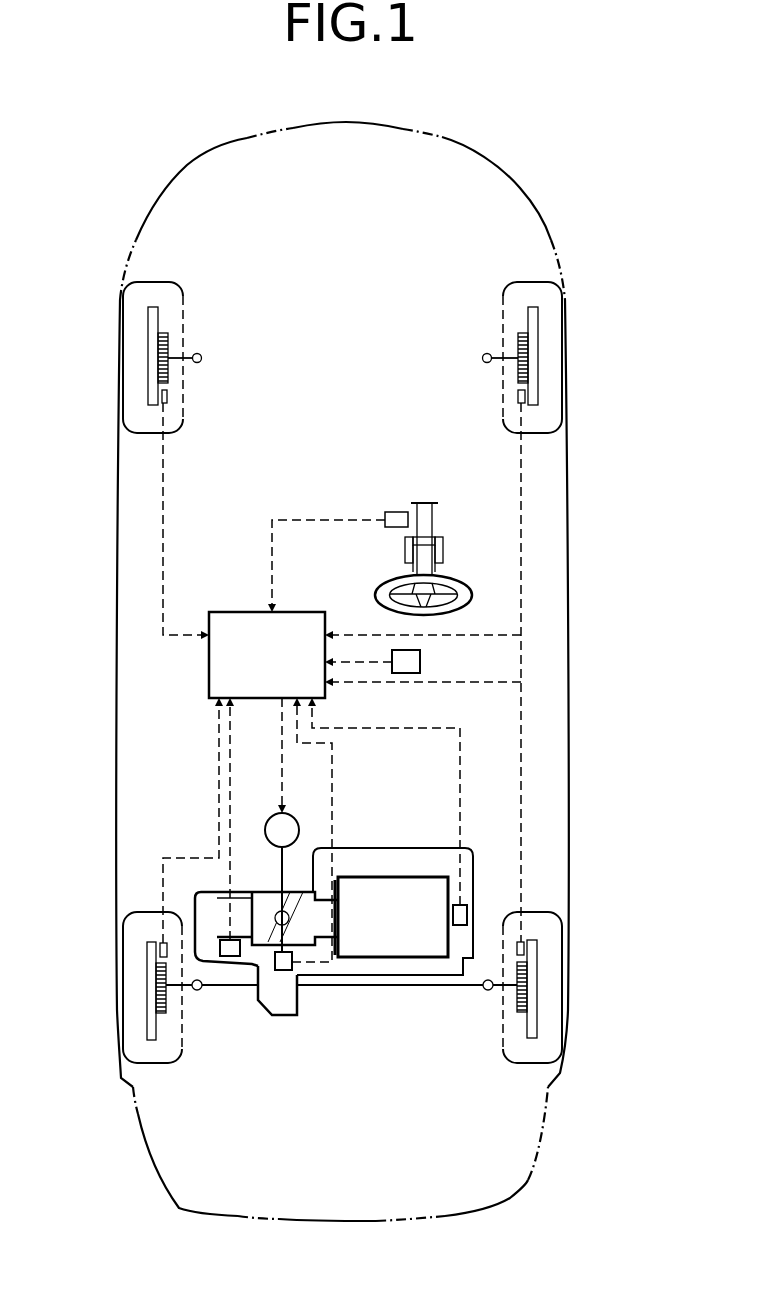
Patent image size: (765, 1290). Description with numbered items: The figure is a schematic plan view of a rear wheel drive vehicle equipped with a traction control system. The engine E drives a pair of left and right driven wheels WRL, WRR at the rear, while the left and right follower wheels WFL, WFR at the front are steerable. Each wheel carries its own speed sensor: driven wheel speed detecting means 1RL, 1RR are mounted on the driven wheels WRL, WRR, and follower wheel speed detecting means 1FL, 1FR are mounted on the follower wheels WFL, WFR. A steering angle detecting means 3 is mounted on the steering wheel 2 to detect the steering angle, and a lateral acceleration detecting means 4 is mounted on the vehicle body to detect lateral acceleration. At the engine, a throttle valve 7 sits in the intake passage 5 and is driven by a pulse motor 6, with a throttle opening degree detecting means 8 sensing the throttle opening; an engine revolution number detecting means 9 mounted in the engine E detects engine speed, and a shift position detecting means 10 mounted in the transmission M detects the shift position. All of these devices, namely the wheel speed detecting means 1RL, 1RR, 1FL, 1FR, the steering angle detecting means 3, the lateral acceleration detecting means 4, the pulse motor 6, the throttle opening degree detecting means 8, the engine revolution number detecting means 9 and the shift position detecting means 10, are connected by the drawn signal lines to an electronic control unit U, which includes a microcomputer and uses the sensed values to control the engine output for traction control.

The left follower wheel WFL is at (125, 318).
The right follower wheel WFR is at (562, 325).
The left driven wheel WRL is at (120, 921).
The right driven wheel WRR is at (562, 963).
The follower wheel speed detecting means 1FL is at (160, 394).
The follower wheel speed detecting means 1FR is at (525, 395).
The driven wheel speed detecting means 1RL is at (162, 943).
The driven wheel speed detecting means 1RR is at (526, 946).
The steering wheel 2 is at (453, 578).
The steering angle detecting means 3 is at (396, 528).
The lateral acceleration detecting means 4 is at (420, 662).
The electronic control unit U is at (279, 676).
The intake passage 5 is at (235, 892).
The pulse motor 6 is at (289, 815).
The throttle valve 7 is at (246, 893).
The throttle opening degree detecting means 8 is at (289, 972).
The engine revolution number detecting means 9 is at (453, 914).
The shift position detecting means 10 is at (229, 958).
The engine E is at (405, 843).
The transmission M is at (272, 1018).